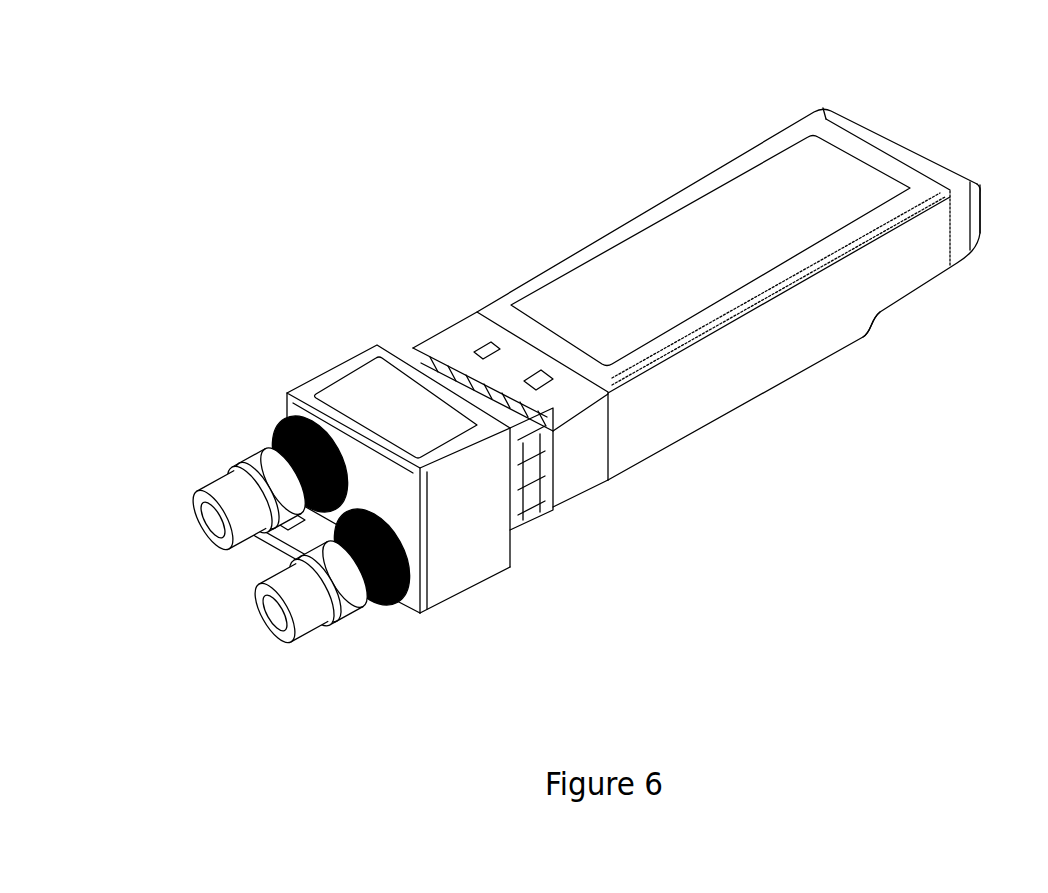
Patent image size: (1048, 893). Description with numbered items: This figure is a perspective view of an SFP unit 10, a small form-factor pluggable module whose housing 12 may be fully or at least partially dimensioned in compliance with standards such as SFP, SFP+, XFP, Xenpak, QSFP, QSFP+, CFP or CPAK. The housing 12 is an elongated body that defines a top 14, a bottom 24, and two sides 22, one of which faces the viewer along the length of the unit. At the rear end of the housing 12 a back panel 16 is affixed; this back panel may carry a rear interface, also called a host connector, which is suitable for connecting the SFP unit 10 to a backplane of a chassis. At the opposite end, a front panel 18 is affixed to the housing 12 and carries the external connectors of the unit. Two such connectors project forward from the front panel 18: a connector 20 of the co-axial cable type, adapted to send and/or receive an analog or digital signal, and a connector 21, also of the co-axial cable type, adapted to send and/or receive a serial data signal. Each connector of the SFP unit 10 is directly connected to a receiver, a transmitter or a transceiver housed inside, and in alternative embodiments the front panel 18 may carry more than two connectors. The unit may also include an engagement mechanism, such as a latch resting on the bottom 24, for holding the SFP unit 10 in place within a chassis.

The SFP unit 10 is at (290, 138).
The housing 12 is at (798, 172).
The top 14 is at (696, 278).
The back panel 16 is at (980, 203).
The front panel 18 is at (399, 502).
The connector 20 is at (255, 482).
The connector 21 is at (333, 590).
The sides 22 is at (746, 390).
The bottom 24 is at (810, 363).